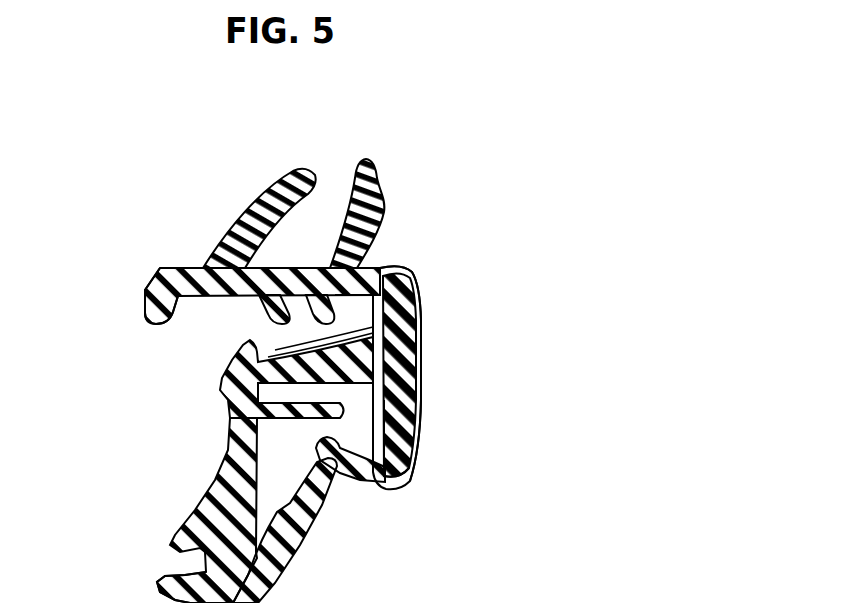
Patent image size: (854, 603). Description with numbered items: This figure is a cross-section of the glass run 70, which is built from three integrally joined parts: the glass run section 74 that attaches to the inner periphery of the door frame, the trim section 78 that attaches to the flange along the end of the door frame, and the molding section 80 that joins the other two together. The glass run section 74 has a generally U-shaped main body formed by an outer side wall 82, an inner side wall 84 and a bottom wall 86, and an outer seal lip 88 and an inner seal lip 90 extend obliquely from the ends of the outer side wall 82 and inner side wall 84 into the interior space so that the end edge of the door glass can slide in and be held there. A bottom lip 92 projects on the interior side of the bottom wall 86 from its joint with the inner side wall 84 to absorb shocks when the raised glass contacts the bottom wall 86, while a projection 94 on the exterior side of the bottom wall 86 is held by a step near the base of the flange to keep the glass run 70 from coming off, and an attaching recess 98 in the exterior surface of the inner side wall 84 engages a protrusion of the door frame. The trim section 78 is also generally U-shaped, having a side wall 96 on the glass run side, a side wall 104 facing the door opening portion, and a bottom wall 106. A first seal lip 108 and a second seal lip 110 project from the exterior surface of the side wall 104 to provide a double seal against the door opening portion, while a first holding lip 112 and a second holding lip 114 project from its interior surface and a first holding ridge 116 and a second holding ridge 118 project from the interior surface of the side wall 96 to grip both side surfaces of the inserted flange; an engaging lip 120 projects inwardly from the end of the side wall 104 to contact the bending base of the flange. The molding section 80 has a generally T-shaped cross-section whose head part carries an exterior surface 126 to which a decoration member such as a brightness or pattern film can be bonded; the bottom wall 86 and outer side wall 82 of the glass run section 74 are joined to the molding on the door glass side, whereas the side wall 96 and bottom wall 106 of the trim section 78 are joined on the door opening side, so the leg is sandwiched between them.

The glass run 70 is at (301, 358).
The glass run section 74 is at (320, 465).
The trim section 78 is at (300, 244).
The molding section 80 is at (446, 399).
The outer side wall 82 is at (441, 440).
The inner side wall 84 is at (174, 510).
The bottom wall 86 is at (463, 473).
The outer seal lip 88 is at (380, 501).
The inner seal lip 90 is at (334, 530).
The bottom lip 92 is at (233, 391).
The projection 94 is at (234, 369).
The side wall 96 is at (404, 355).
The attaching recess 98 is at (153, 573).
The side wall 104 is at (262, 220).
The bottom wall 106 is at (445, 305).
The first seal lip 108 is at (259, 192).
The second seal lip 110 is at (399, 191).
The first holding lip 112 is at (190, 334).
The second holding lip 114 is at (466, 276).
The first holding ridge 116 is at (429, 317).
The second holding ridge 118 is at (459, 360).
The engaging lip 120 is at (111, 301).
The exterior surface 126 is at (483, 440).